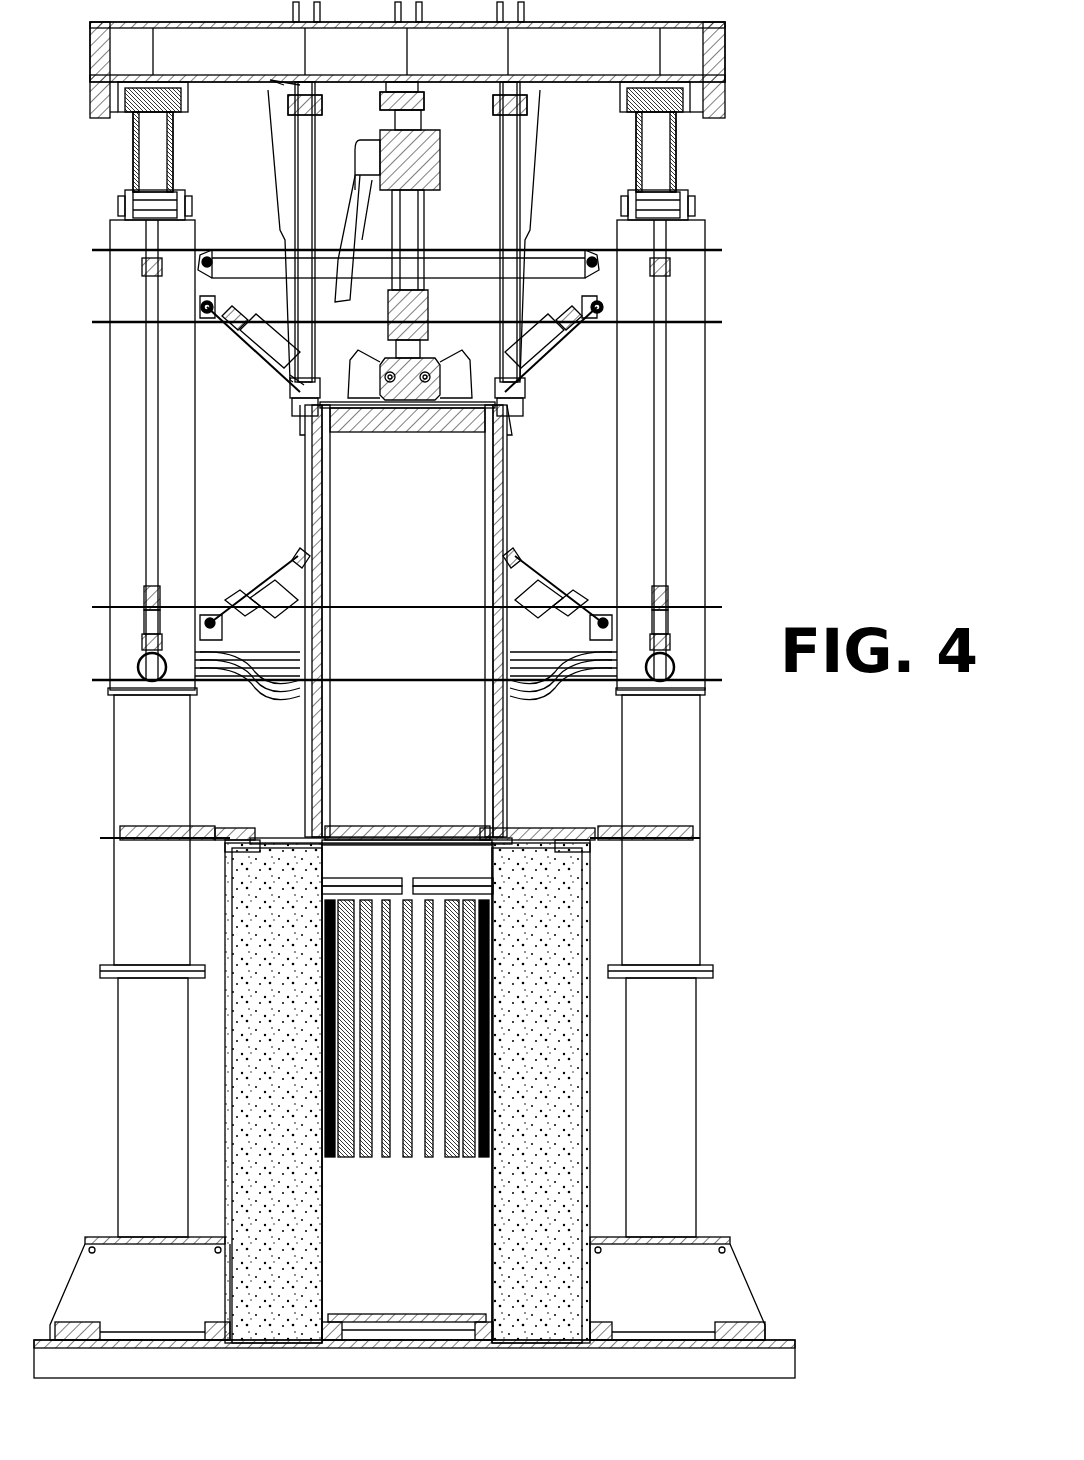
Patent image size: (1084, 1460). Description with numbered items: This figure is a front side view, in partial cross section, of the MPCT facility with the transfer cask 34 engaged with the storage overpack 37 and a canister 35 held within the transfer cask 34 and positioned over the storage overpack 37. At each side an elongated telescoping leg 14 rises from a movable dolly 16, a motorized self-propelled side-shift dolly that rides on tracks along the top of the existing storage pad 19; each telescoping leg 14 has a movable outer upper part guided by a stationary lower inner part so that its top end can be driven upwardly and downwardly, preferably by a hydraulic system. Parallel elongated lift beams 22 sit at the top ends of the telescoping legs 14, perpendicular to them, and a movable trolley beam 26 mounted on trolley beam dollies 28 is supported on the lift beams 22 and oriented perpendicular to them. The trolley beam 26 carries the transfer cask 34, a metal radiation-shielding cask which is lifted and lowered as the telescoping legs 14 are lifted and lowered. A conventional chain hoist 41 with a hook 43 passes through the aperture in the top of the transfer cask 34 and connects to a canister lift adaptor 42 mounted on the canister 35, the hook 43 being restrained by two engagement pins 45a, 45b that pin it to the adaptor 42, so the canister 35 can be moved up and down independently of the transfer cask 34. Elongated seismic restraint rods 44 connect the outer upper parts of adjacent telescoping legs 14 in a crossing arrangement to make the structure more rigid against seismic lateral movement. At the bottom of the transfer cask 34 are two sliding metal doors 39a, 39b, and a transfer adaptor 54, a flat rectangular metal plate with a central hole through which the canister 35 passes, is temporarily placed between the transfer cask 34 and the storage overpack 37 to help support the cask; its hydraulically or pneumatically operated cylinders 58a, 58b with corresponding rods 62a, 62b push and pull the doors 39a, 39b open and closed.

The telescoping leg 14 is at (164, 1103).
The movable dolly 16 is at (165, 1298).
The storage pad 19 is at (770, 1360).
The lift beam 22 is at (164, 161).
The trolley beam 26 is at (602, 63).
The trolley beam dolly 28 is at (690, 220).
The transfer cask 34 is at (505, 500).
The canister 35 is at (423, 628).
The storage overpack 37 is at (305, 438).
The sliding metal door 39a is at (360, 830).
The sliding metal door 39b is at (465, 828).
The hoist 41 is at (446, 165).
The canister lift adaptor 42 is at (448, 398).
The hook 43 is at (392, 388).
The seismic restraint rod 44 is at (257, 350).
The engagement pin 45a is at (390, 383).
The engagement pin 45b is at (427, 383).
The transfer adaptor 54 is at (558, 850).
The cylinder 58a is at (665, 830).
The cylinder 58b is at (148, 830).
The rod 62a is at (540, 830).
The rod 62b is at (245, 830).